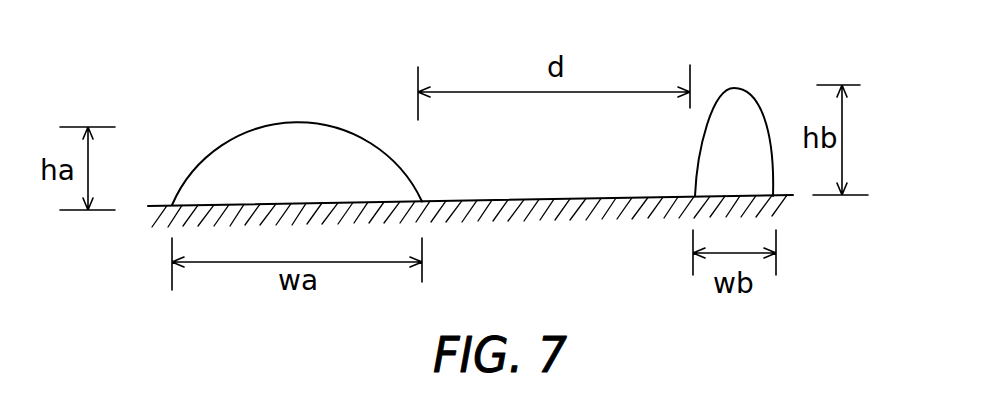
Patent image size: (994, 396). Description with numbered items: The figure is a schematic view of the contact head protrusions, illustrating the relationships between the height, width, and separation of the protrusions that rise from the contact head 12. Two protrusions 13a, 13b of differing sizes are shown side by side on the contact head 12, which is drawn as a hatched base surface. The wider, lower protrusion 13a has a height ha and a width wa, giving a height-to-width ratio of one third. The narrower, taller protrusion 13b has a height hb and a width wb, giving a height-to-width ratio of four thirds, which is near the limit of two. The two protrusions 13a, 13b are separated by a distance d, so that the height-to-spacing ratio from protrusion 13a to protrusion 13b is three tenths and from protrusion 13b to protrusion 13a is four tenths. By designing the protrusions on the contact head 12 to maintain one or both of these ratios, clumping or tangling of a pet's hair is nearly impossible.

The contact head 12 is at (160, 217).
The protrusion 13a is at (368, 180).
The protrusion 13b is at (718, 174).